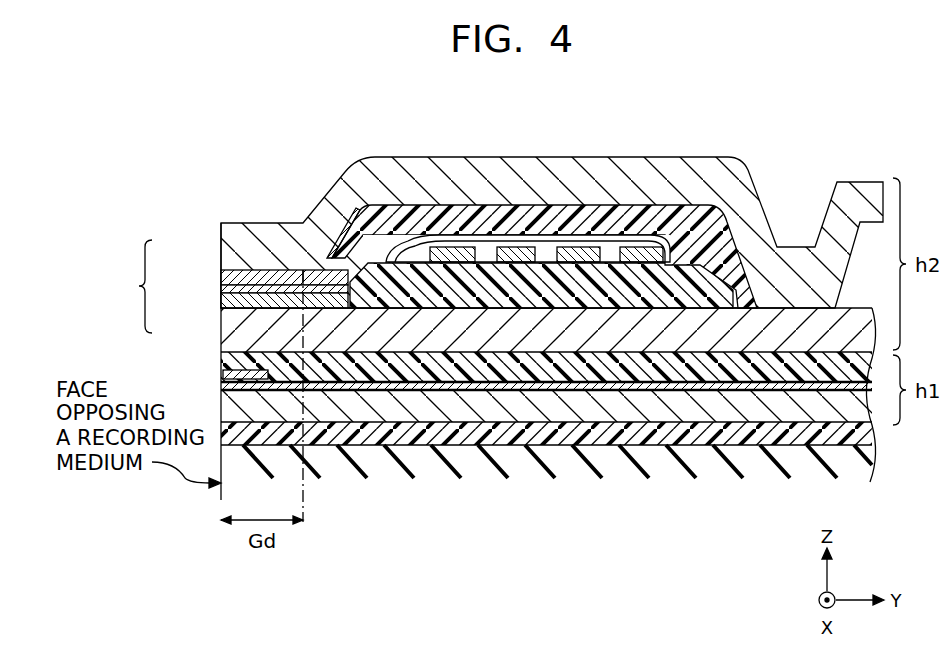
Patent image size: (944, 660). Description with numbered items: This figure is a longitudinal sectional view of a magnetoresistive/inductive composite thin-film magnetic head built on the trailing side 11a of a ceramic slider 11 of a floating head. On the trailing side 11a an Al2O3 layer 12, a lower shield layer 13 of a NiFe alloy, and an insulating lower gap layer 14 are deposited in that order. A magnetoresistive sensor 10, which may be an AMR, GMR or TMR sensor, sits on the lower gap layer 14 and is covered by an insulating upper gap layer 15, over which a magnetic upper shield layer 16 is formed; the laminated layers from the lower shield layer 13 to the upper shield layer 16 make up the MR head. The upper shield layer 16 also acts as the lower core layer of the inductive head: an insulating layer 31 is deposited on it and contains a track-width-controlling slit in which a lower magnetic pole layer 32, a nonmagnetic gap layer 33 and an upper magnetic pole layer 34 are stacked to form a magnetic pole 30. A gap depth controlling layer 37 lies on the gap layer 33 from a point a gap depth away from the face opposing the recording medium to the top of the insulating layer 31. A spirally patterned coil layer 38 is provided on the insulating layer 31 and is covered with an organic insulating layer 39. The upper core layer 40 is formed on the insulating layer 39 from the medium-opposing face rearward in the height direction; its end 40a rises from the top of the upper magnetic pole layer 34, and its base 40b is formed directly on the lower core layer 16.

The magnetoresistive sensor 10 is at (221, 375).
The ceramic slider 11 is at (767, 463).
The trailing side 11a is at (705, 440).
The Al2O3 layer 12 is at (630, 428).
The lower shield layer 13 is at (595, 407).
The lower gap layer 14 is at (543, 387).
The upper gap layer 15 is at (497, 363).
The upper shield layer 16 is at (433, 333).
The magnetic pole 30 is at (226, 286).
The insulating layer 31 is at (386, 292).
The lower magnetic pole layer 32 is at (221, 300).
The nonmagnetic gap layer 33 is at (221, 289).
The upper magnetic pole layer 34 is at (221, 272).
The gap depth controlling layer 37 is at (345, 212).
The coil layer 38 is at (553, 230).
The organic insulating layer 39 is at (713, 233).
The upper core layer 40 is at (443, 183).
The end of the upper core layer 40a is at (262, 240).
The base of the upper core layer 40b is at (797, 285).